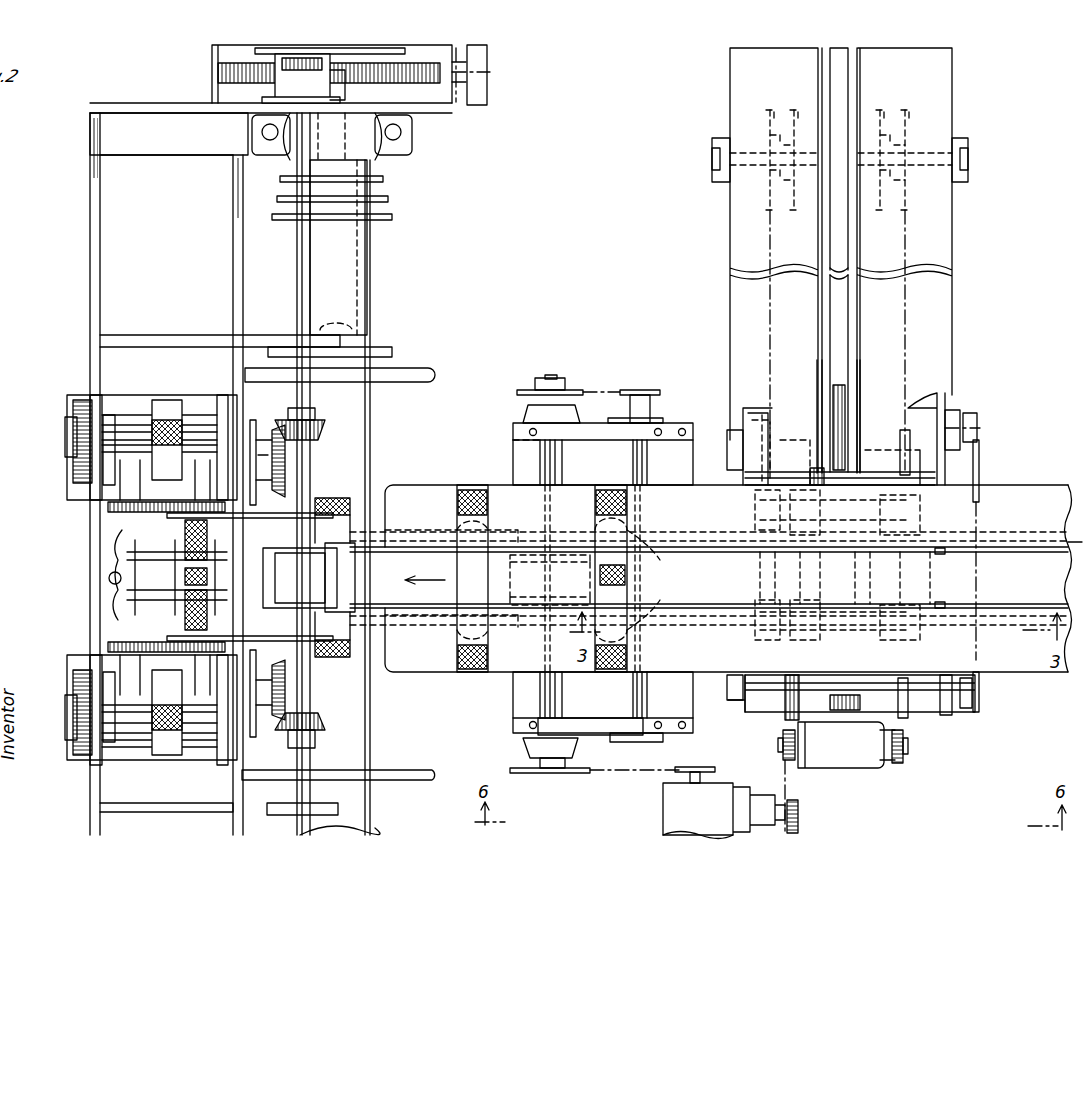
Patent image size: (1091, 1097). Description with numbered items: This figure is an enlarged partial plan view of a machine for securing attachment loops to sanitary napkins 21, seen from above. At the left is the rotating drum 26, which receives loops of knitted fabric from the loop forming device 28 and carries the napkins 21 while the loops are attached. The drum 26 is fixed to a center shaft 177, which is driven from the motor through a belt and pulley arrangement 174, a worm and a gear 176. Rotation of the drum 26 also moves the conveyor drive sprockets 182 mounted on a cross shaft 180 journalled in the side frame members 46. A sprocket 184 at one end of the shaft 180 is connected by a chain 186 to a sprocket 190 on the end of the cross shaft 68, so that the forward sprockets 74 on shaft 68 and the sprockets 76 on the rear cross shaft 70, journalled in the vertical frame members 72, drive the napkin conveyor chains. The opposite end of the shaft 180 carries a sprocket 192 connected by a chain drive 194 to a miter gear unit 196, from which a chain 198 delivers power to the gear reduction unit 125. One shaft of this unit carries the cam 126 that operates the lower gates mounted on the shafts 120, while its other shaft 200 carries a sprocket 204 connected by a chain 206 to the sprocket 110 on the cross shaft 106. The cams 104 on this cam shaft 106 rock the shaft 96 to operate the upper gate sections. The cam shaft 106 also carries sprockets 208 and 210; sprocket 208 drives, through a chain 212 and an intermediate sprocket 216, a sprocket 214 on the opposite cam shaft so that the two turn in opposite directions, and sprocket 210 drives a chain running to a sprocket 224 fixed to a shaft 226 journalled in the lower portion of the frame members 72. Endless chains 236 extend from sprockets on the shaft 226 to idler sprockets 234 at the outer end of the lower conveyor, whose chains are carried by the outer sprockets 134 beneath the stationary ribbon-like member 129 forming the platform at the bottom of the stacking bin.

The sanitary napkin 21 is at (460, 558).
The rotating drum 26 is at (148, 625).
The loop forming device 28 is at (195, 405).
The side frame member 46 is at (600, 718).
The cross shaft 68 is at (632, 465).
The cross shaft 70 is at (932, 590).
The vertical frame member 72 is at (948, 395).
The sprocket 74 is at (654, 580).
The sprocket 76 is at (940, 548).
The shaft 96 is at (872, 538).
The cam 104 is at (808, 418).
The cross shaft 106 is at (888, 470).
The sprocket 110 is at (925, 705).
The shaft 120 is at (888, 590).
The gear reduction unit 125 is at (875, 770).
The cam 126 is at (860, 710).
The stationary ribbon-like member 129 is at (842, 298).
The sprocket 134 is at (805, 115).
The belt and pulley arrangement 174 is at (490, 90).
The gear 176 is at (393, 78).
The center shaft 177 is at (357, 237).
The cross shaft 180 is at (560, 455).
The conveyor drive sprocket 182 is at (568, 565).
The sprocket 184 is at (525, 390).
The chain 186 is at (603, 390).
The sprocket 190 is at (632, 388).
The sprocket 192 is at (548, 773).
The chain drive 194 is at (628, 768).
The miter gear unit 196 is at (662, 795).
The chain 198 is at (790, 790).
The shaft 200 is at (782, 745).
The sprocket 204 is at (908, 750).
The chain 206 is at (905, 720).
The sprocket 208 is at (982, 692).
The sprocket 210 is at (775, 710).
The chain 212 is at (980, 540).
The sprocket 214 is at (980, 458).
The intermediate sprocket 216 is at (980, 418).
The sprocket 224 is at (753, 418).
The shaft 226 is at (797, 440).
The idler sprocket 234 is at (770, 178).
The endless chain 236 is at (768, 358).